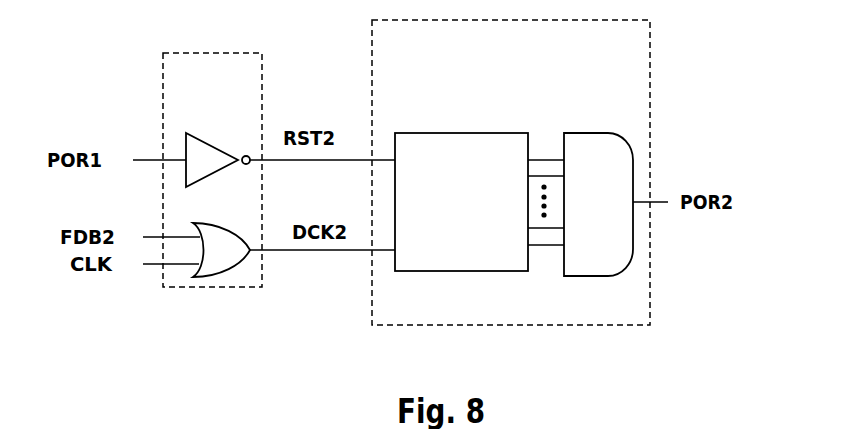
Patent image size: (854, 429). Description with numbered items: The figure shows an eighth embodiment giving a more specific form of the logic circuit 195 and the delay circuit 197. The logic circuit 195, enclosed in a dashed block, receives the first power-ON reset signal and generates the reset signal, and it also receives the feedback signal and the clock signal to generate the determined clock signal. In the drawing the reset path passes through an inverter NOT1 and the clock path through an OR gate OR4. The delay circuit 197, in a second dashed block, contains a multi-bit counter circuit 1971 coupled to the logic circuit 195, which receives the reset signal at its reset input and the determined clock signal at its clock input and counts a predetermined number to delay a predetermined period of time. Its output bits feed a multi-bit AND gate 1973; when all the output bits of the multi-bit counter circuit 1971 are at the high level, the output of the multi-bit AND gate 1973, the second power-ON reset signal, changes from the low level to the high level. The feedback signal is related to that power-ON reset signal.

The logic circuit 195 is at (212, 85).
The delay circuit 197 is at (427, 59).
The multi-bit counter circuit 1971 is at (523, 263).
The multi-bit AND gate 1973 is at (592, 133).
The inverter NOT1 is at (212, 143).
The OR gate OR4 is at (220, 278).